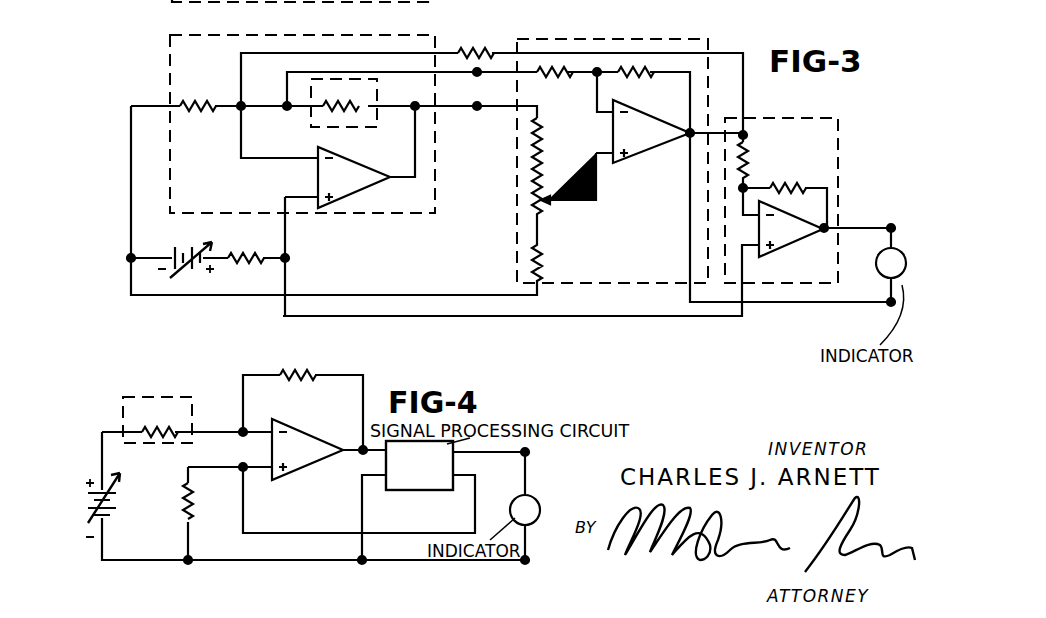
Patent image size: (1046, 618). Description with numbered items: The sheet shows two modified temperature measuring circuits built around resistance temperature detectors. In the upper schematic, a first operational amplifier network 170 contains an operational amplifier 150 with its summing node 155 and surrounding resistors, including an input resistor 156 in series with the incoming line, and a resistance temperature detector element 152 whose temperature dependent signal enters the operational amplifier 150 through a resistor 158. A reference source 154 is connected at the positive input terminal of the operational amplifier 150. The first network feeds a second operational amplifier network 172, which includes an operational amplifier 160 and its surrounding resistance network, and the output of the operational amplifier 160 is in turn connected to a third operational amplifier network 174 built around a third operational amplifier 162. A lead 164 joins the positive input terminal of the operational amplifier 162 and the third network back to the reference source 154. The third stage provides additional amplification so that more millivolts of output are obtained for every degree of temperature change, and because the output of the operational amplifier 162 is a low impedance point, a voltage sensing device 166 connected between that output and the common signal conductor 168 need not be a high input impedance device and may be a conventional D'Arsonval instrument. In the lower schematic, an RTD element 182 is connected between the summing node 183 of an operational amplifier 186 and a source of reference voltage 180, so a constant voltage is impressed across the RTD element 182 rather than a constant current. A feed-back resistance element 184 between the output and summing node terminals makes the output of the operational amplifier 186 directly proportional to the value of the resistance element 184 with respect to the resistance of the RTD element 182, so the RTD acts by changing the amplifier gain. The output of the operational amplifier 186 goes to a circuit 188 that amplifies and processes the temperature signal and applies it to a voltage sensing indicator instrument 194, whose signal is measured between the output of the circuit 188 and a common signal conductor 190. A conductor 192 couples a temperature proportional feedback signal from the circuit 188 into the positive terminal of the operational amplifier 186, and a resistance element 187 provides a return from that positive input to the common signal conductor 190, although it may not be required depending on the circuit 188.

In FIG. 3, the operational amplifier 150 is at (362, 186).
In FIG. 3, the resistance temperature detector element 152 is at (312, 128).
In FIG. 3, the reference source 154 is at (191, 244).
In FIG. 3, the summing node 155 is at (237, 112).
In FIG. 3, the input resistor 156 is at (198, 98).
In FIG. 3, the resistor 158 is at (472, 47).
In FIG. 3, the operational amplifier 160 is at (657, 150).
In FIG. 3, the third operational amplifier 162 is at (792, 241).
In FIG. 3, the lead 164 is at (655, 317).
In FIG. 3, the voltage sensing device 166 is at (876, 258).
In FIG. 3, the common signal conductor 168 is at (848, 305).
In FIG. 3, the first operational amplifier network 170 is at (166, 52).
In FIG. 3, the second operational amplifier network 172 is at (637, 38).
In FIG. 3, the third operational amplifier network 174 is at (795, 118).
In FIG. 4, the source of reference voltage 180 is at (86, 497).
In FIG. 4, the RTD element 182 is at (163, 436).
In FIG. 4, the summing node 183 is at (242, 436).
In FIG. 4, the feed-back resistance element 184 is at (301, 368).
In FIG. 4, the operational amplifier 186 is at (307, 468).
In FIG. 4, the resistance element 187 is at (182, 510).
In FIG. 4, the circuit 188 is at (437, 482).
In FIG. 4, the common signal conductor 190 is at (297, 561).
In FIG. 4, the conductor 192 is at (430, 533).
In FIG. 4, the voltage sensing indicator instrument 194 is at (513, 497).